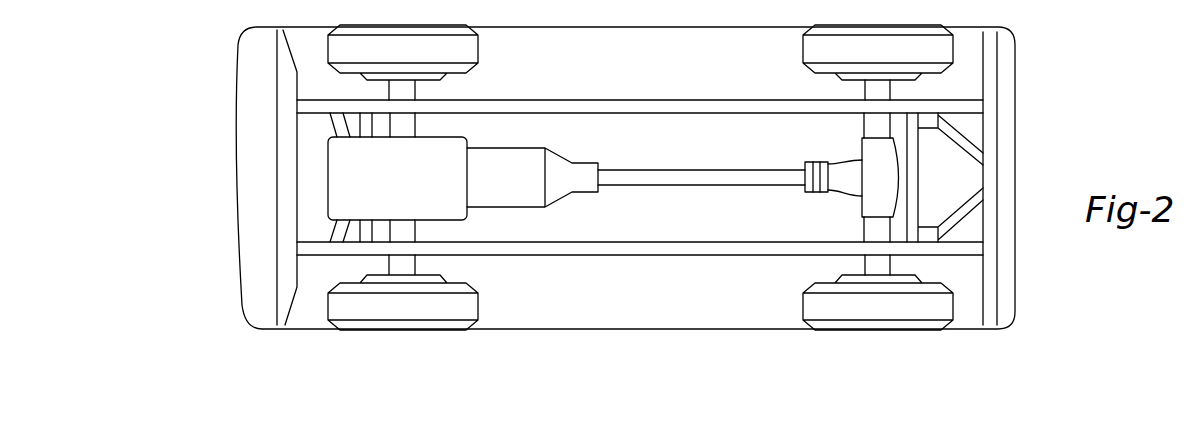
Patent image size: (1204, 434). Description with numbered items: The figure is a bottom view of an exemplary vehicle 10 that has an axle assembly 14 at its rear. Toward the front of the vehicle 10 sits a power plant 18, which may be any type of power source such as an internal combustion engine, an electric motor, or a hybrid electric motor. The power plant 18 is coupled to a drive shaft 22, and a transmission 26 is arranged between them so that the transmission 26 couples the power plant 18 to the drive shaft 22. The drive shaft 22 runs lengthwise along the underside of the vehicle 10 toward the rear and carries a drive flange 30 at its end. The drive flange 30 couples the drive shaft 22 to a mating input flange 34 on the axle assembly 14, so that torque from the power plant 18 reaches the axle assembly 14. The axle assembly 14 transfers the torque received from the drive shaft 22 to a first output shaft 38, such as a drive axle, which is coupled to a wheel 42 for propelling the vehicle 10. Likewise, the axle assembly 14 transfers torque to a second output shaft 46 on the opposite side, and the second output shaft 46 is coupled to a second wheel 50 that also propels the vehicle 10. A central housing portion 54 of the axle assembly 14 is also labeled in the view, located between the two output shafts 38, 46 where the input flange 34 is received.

The vehicle 10 is at (232, 61).
The axle assembly 14 is at (915, 180).
The power plant 18 is at (345, 182).
The drive shaft 22 is at (670, 178).
The transmission 26 is at (506, 187).
The drive flange 30 is at (810, 192).
The input flange 34 is at (825, 193).
The first output shaft 38 is at (892, 90).
The wheel 42 is at (945, 50).
The second output shaft 46 is at (893, 268).
The second wheel 50 is at (937, 310).
The differential 54 is at (880, 205).